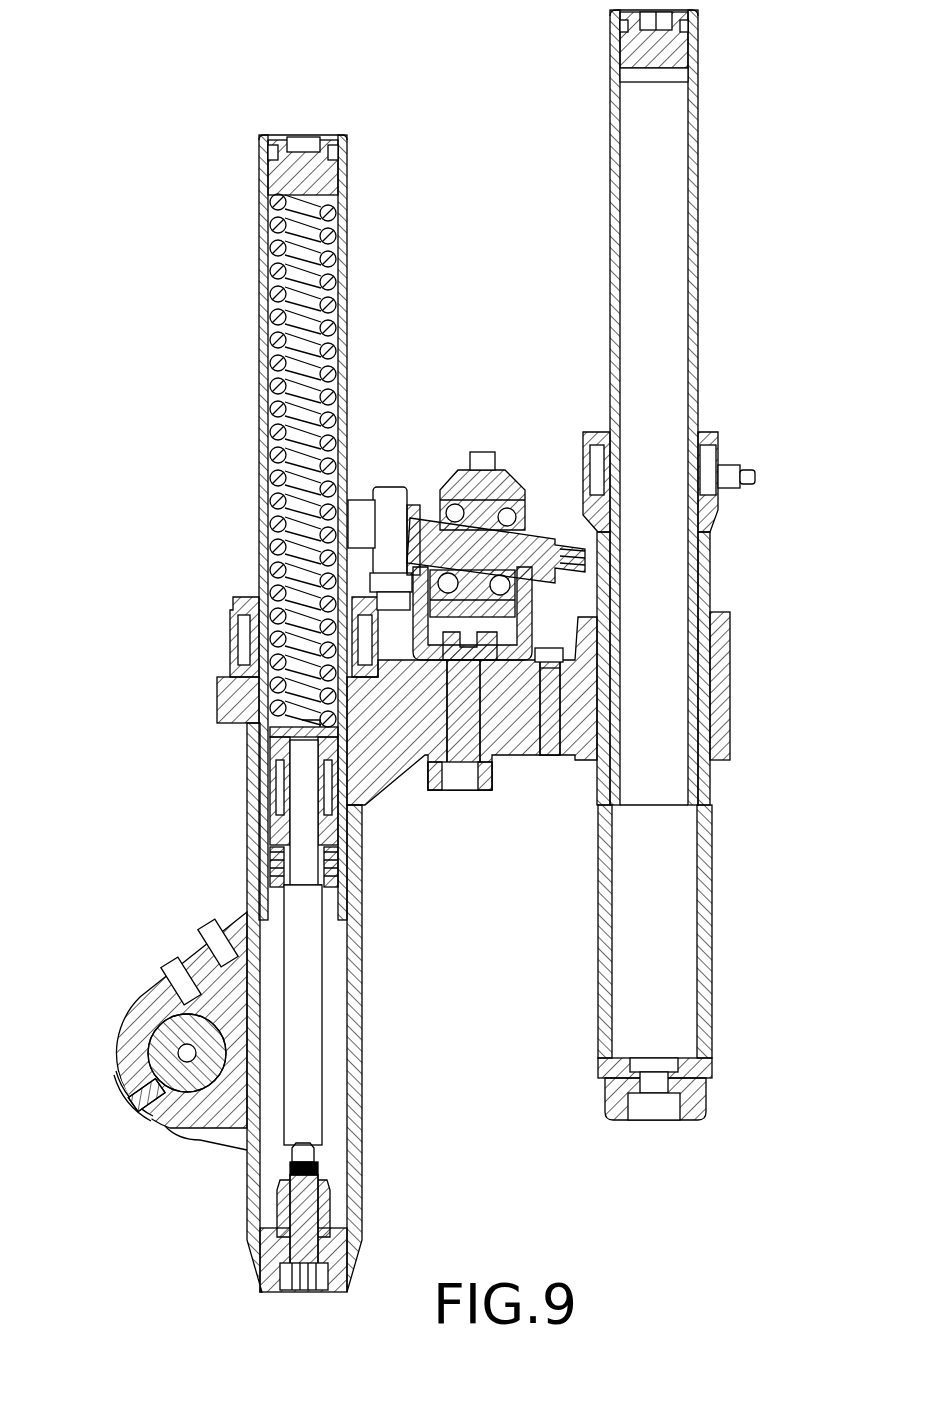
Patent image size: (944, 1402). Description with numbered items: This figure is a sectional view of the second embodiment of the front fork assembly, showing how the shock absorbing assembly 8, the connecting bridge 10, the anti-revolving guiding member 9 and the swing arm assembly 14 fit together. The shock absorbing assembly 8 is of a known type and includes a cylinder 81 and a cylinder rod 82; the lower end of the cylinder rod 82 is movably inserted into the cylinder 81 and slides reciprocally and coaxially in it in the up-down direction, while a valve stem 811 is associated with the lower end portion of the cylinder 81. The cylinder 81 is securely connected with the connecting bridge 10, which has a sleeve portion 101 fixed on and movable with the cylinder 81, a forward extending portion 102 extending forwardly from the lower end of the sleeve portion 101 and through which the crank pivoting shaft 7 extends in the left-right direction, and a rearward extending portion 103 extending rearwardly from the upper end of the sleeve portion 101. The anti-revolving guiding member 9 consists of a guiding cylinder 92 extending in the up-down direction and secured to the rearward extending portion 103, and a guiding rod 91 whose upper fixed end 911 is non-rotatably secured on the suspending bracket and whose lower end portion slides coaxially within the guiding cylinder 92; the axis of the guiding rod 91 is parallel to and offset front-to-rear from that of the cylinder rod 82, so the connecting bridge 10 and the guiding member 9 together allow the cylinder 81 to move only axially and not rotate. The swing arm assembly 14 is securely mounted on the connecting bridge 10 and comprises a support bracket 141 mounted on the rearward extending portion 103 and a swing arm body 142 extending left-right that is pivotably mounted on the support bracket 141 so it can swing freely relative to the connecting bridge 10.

The crank pivoting shaft 7 is at (160, 1038).
The shock absorbing assembly 8 is at (257, 400).
The anti-revolving guiding member 9 is at (697, 565).
The connecting bridge 10 is at (396, 792).
The swing arm assembly 14 is at (585, 521).
The cylinder 81 is at (232, 612).
The cylinder rod 82 is at (262, 268).
The guiding rod 91 is at (700, 232).
The guiding cylinder 92 is at (713, 570).
The sleeve portion 101 is at (255, 805).
The forward extending portion 102 is at (196, 932).
The rearward extending portion 103 is at (577, 715).
The support bracket 141 is at (520, 600).
The swing arm body 142 is at (480, 462).
The valve stem 811 is at (310, 1037).
The upper fixed end 911 is at (698, 44).